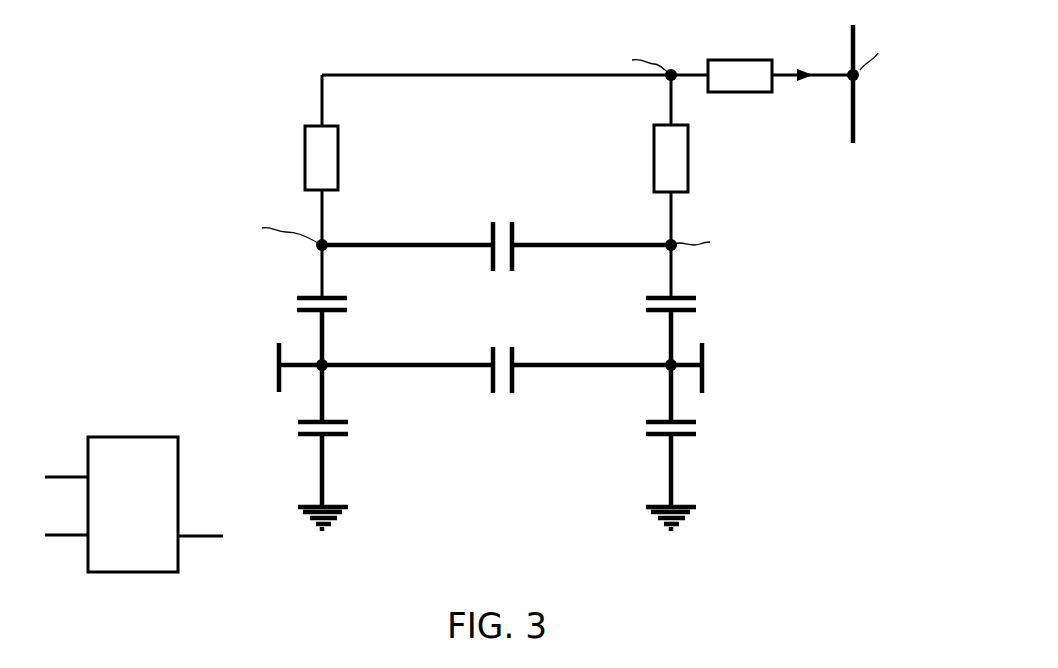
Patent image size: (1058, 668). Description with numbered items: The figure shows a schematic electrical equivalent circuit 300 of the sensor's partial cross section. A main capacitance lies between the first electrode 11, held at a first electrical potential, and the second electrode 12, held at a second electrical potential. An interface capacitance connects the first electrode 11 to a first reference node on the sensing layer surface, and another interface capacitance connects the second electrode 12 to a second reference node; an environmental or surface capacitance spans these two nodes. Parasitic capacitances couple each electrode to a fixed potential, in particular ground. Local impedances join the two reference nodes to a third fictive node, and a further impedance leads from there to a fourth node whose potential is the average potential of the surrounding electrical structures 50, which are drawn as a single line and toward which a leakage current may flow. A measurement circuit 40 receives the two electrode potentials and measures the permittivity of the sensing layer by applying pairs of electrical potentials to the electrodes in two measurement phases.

The first electrode 11 is at (277, 353).
The second electrode 12 is at (705, 360).
The measurement circuit 40 is at (158, 496).
The electrical structures 50 is at (855, 129).
The electrical equivalent circuit 300 is at (476, 317).